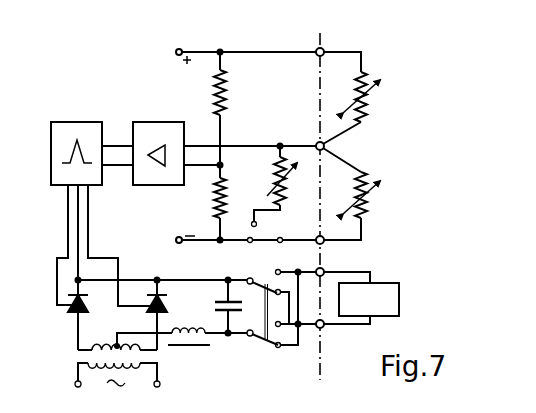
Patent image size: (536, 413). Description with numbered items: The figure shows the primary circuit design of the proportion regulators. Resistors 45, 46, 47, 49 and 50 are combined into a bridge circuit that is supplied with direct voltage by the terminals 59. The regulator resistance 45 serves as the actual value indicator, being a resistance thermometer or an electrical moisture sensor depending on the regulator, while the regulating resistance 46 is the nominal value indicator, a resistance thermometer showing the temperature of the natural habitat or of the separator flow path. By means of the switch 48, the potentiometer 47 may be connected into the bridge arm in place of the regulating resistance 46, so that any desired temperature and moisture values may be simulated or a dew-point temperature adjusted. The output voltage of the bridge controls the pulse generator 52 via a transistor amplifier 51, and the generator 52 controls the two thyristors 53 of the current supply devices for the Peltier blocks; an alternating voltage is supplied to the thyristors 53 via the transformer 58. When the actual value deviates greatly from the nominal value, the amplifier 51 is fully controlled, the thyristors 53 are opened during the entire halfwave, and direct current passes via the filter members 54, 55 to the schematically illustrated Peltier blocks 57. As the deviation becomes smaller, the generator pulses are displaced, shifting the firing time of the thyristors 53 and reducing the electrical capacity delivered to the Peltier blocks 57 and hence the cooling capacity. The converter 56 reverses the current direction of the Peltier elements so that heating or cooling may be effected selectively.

The regulator resistance 45 is at (367, 110).
The regulating resistance 46 is at (367, 207).
The potentiometer 47 is at (273, 172).
The switch 48 is at (266, 240).
The resistor 49 is at (226, 212).
The resistor 50 is at (226, 90).
The transistor amplifier 51 is at (174, 120).
The pulse generator 52 is at (92, 120).
The thyristors 53 is at (70, 312).
The filter member 54 is at (217, 302).
The filter member 55 is at (208, 340).
The converter 56 is at (268, 276).
The Peltier blocks 57 is at (400, 300).
The transformer 58 is at (75, 353).
The terminals 59 is at (175, 145).